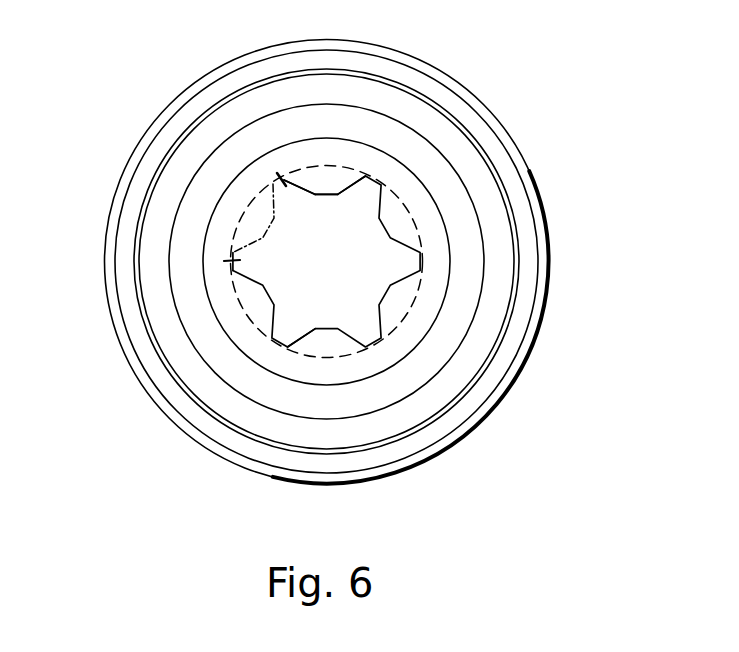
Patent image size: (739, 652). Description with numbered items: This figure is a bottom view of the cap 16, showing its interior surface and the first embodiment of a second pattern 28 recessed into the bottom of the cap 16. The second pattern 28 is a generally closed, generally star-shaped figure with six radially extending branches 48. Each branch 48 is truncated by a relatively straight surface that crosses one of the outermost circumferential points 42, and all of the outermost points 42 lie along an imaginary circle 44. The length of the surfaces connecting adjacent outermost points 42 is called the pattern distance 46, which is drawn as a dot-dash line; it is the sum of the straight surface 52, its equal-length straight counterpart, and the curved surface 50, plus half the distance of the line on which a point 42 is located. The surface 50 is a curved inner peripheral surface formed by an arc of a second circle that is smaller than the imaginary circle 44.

The cap 16 is at (552, 132).
The second pattern 28 is at (380, 321).
The outermost circumferential points 42 is at (283, 180).
The imaginary circle 44 is at (413, 220).
The pattern distance 46 is at (241, 222).
The branches 48 is at (297, 176).
The surface 50 is at (332, 193).
The surface 52 is at (352, 172).